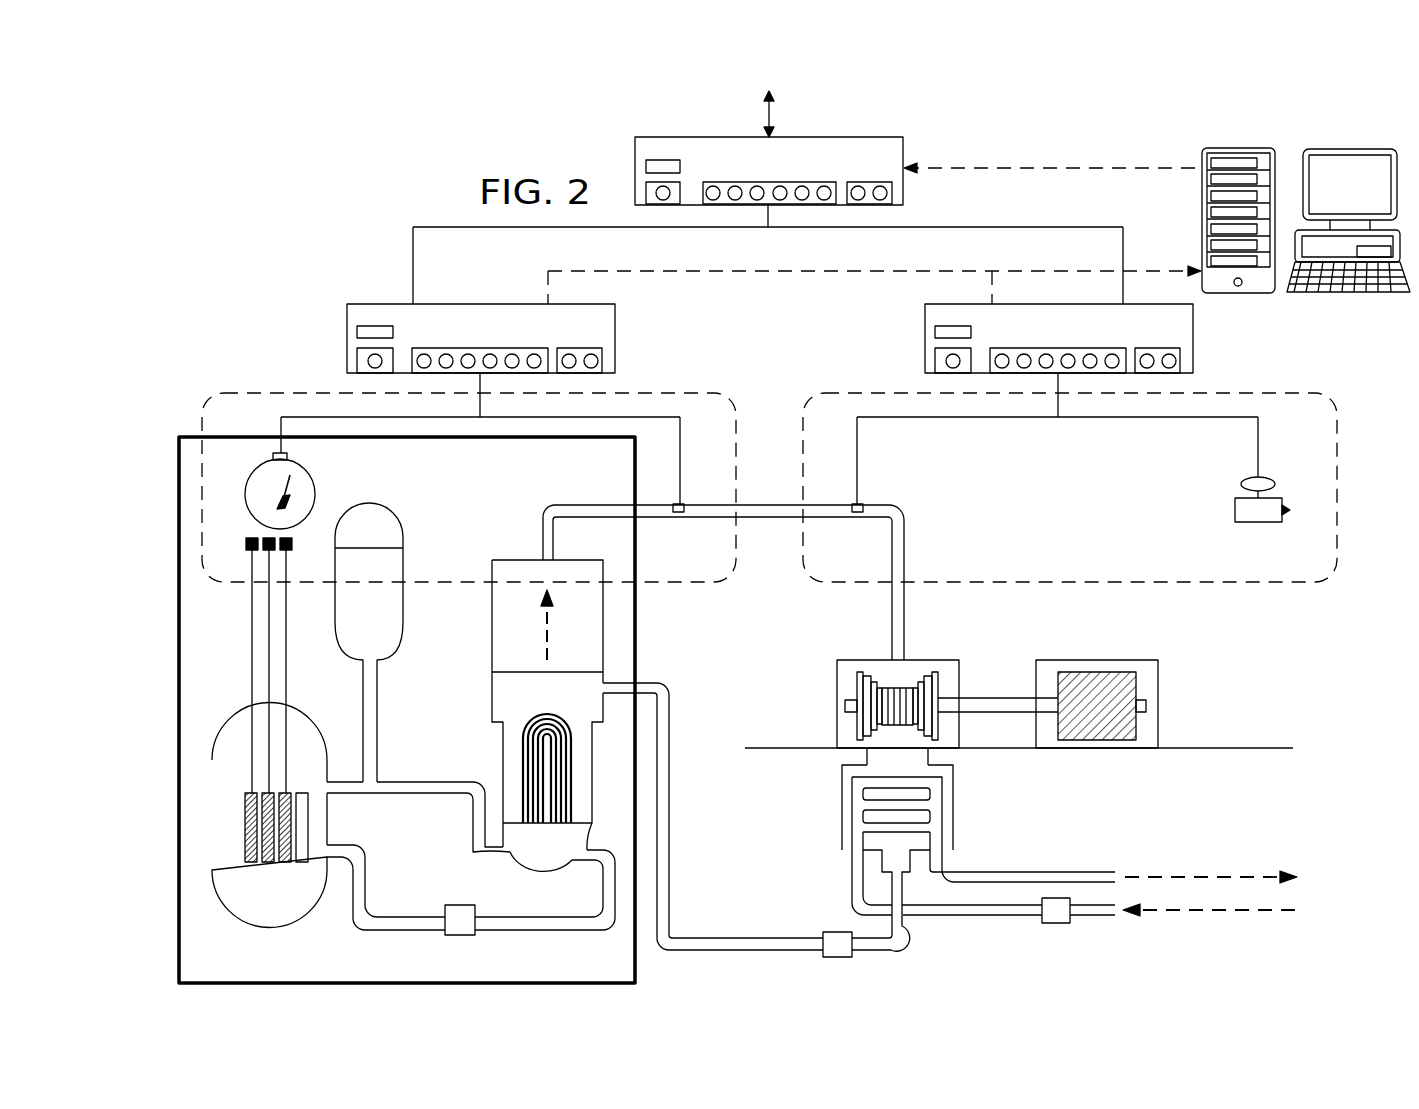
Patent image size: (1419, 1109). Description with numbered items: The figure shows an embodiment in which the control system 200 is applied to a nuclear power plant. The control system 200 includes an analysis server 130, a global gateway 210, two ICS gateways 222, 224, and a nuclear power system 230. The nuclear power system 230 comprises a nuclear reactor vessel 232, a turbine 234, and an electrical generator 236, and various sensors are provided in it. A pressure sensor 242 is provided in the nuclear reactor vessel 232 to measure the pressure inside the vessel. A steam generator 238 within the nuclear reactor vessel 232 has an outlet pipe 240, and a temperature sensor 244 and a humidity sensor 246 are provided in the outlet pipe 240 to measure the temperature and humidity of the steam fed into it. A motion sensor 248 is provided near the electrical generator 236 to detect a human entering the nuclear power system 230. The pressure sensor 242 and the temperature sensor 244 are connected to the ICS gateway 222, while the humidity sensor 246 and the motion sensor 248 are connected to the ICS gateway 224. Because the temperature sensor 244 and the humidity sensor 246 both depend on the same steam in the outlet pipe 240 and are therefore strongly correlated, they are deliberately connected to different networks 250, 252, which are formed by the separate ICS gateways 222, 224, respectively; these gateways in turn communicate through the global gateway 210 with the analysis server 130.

The control system 200 is at (331, 179).
The analysis server 130 is at (1239, 148).
The global gateway 210 is at (905, 160).
The ICS gateway 222 is at (347, 340).
The ICS gateway 224 is at (1193, 341).
The nuclear power system 230 is at (157, 752).
The nuclear reactor vessel 232 is at (648, 634).
The turbine 234 is at (940, 660).
The electrical generator 236 is at (1100, 660).
The steam generator 238 is at (497, 627).
The outlet pipe 240 is at (762, 505).
The pressure sensor 242 is at (316, 493).
The temperature sensor 244 is at (683, 513).
The humidity sensor 246 is at (857, 513).
The motion sensor 248 is at (1270, 523).
The network 250 is at (630, 390).
The network 252 is at (1348, 455).